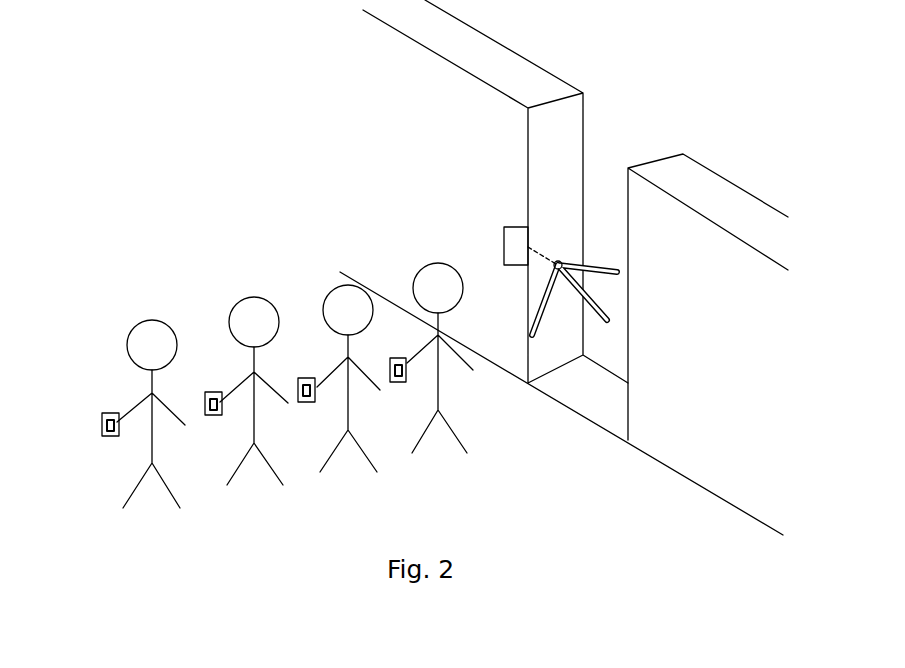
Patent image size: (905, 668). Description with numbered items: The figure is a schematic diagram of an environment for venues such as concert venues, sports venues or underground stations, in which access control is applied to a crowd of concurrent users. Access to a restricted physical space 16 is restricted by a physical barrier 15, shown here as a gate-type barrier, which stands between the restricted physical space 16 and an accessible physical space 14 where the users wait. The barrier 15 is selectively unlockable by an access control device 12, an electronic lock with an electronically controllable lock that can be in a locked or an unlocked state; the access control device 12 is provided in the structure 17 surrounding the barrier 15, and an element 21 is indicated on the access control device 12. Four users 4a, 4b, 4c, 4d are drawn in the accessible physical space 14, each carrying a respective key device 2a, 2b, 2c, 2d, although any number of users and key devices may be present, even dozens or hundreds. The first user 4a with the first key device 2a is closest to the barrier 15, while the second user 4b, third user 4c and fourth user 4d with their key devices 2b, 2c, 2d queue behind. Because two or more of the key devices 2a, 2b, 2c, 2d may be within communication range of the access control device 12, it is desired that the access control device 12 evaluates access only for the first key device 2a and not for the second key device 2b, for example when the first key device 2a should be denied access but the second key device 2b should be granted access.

The first key device 2a is at (398, 382).
The second key device 2b is at (306, 402).
The third key device 2c is at (214, 415).
The fourth key device 2d is at (110, 436).
The first user 4a is at (421, 268).
The second user 4b is at (336, 287).
The third user 4c is at (236, 303).
The fourth user 4d is at (133, 324).
The access control device 12 is at (504, 242).
The accessible physical space 14 is at (273, 222).
The physical barrier 15 is at (605, 323).
The restricted physical space 16 is at (741, 37).
The structure 17 is at (481, 147).
The reader / sensor of access control device 21 is at (504, 257).